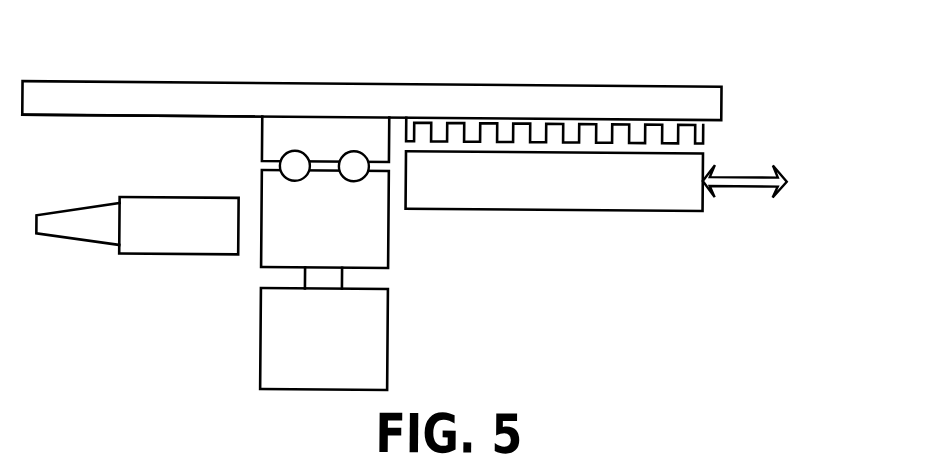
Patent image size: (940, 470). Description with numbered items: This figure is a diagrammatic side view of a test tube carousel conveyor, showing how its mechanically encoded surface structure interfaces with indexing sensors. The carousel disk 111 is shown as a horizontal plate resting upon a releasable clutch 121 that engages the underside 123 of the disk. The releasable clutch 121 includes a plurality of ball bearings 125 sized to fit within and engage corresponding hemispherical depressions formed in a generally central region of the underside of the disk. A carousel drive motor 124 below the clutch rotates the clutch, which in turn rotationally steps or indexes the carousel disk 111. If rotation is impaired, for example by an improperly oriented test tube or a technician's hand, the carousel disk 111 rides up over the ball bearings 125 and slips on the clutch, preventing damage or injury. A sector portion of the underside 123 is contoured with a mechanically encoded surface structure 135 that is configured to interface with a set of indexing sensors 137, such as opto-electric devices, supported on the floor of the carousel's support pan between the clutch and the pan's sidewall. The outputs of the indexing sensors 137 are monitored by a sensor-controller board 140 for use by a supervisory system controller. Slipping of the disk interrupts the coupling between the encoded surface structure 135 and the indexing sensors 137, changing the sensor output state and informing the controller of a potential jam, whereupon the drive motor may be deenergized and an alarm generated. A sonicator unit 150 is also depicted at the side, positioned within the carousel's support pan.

The carousel disk 111 is at (487, 96).
The underside of the disk 123 is at (97, 116).
The ball bearings 125 is at (295, 137).
The releasable clutch 121 is at (308, 244).
The carousel drive motor 124 is at (306, 364).
The mechanically encoded surface structure 135 is at (573, 113).
The indexing sensors 137 is at (535, 201).
The sensor-controller board 140 is at (802, 188).
The sonicator unit 150 is at (162, 248).